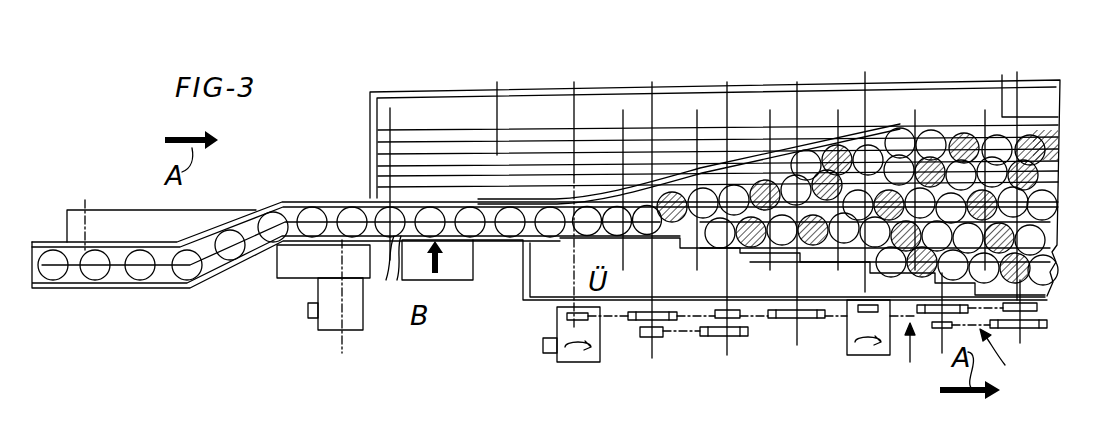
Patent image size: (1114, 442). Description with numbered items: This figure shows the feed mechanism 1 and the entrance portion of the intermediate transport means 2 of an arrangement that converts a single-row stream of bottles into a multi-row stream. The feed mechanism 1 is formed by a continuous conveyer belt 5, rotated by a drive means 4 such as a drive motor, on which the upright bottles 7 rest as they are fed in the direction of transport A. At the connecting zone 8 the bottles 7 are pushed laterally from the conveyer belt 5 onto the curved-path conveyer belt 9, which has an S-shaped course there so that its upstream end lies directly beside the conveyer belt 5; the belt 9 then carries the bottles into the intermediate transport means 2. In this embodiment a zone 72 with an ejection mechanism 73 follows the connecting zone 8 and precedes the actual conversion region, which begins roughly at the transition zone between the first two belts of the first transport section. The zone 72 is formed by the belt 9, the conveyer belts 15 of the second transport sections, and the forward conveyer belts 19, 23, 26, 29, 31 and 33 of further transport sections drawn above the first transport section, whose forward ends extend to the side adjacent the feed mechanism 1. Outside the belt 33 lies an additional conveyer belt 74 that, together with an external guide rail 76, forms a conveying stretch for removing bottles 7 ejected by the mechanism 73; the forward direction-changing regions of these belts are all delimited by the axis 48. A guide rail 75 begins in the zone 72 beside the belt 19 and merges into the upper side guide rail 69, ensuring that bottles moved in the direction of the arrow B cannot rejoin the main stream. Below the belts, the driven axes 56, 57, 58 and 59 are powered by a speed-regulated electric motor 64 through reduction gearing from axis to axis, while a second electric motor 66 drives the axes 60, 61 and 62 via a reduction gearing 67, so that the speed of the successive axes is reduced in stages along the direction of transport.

The feed mechanism 1 is at (142, 197).
The intermediate transport means 2 is at (698, 76).
The drive means 4 is at (330, 325).
The conveyer belt 5 is at (264, 270).
The bottles 7 is at (100, 275).
The connecting zone 8 is at (357, 181).
The curved-path conveyer belt 9 is at (232, 238).
The conveyer belt 15 is at (390, 276).
The conveyer belt 19 is at (425, 195).
The conveyer belt 23 is at (453, 180).
The conveyer belt 26 is at (509, 106).
The conveyer belt 29 is at (518, 157).
The conveyer belt 31 is at (587, 130).
The conveyer belt 33 is at (612, 128).
The axis 48 is at (388, 112).
The axis 56 is at (575, 260).
The axis 57 is at (653, 345).
The axis 58 is at (728, 345).
The axis 59 is at (797, 336).
The axis 60 is at (852, 292).
The axis 61 is at (938, 72).
The axis 62 is at (1020, 70).
The electric motor 64 is at (560, 360).
The electric motor 66 is at (864, 355).
The reduction gearing 67 is at (968, 335).
The side guide rails 69 is at (1001, 76).
The zone 72 is at (417, 88).
The ejection mechanism 73 is at (452, 276).
The additional conveyer belt 74 is at (820, 96).
The guide rail 75 is at (745, 150).
The external guide rail 76 is at (1045, 76).